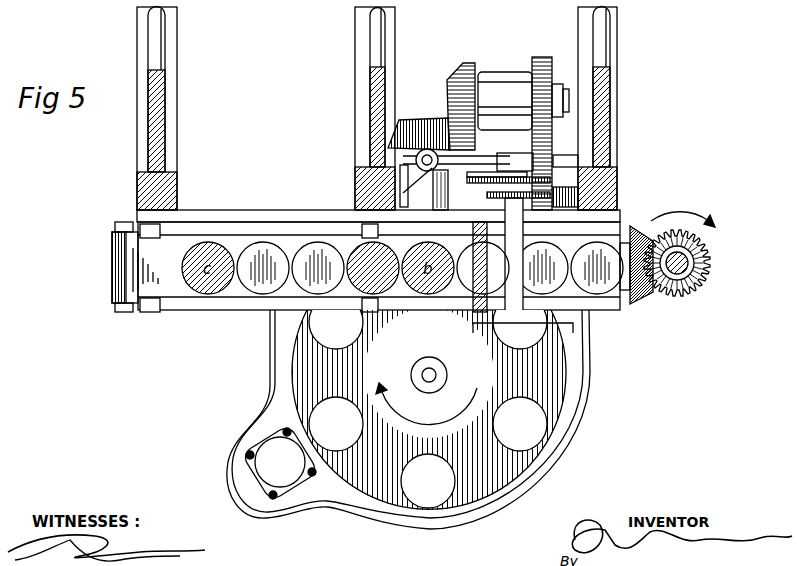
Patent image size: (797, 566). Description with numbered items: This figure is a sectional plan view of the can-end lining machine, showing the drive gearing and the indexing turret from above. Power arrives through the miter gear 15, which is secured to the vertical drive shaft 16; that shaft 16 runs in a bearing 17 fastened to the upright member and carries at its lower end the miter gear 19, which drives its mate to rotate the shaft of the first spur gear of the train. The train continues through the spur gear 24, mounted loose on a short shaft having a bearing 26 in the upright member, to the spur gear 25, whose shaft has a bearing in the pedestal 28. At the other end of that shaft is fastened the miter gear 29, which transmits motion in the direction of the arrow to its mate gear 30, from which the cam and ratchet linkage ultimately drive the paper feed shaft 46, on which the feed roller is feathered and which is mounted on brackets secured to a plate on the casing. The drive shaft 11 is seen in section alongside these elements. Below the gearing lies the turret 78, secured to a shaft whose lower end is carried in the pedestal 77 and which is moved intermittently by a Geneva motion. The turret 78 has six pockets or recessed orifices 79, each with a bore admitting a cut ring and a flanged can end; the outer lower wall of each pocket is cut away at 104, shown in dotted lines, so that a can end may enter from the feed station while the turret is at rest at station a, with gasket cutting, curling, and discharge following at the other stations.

The drive shaft 11 is at (350, 268).
The mate gear 15 is at (705, 292).
The vertical drive shaft 16 is at (525, 330).
The bearing 17 is at (637, 227).
The miter gear 19 is at (372, 268).
The spur gear 24 is at (550, 147).
The spur gear 25 is at (543, 58).
The bearing 26 is at (568, 163).
The pedestal 28 is at (505, 90).
The miter gear 29 is at (463, 65).
The mate gear 30 is at (428, 116).
The shaft 46 is at (503, 195).
The pedestal 77 is at (516, 404).
The turret 78 is at (561, 380).
The pockets or recessed orifices 79 is at (412, 472).
The radial slot 104 is at (552, 424).